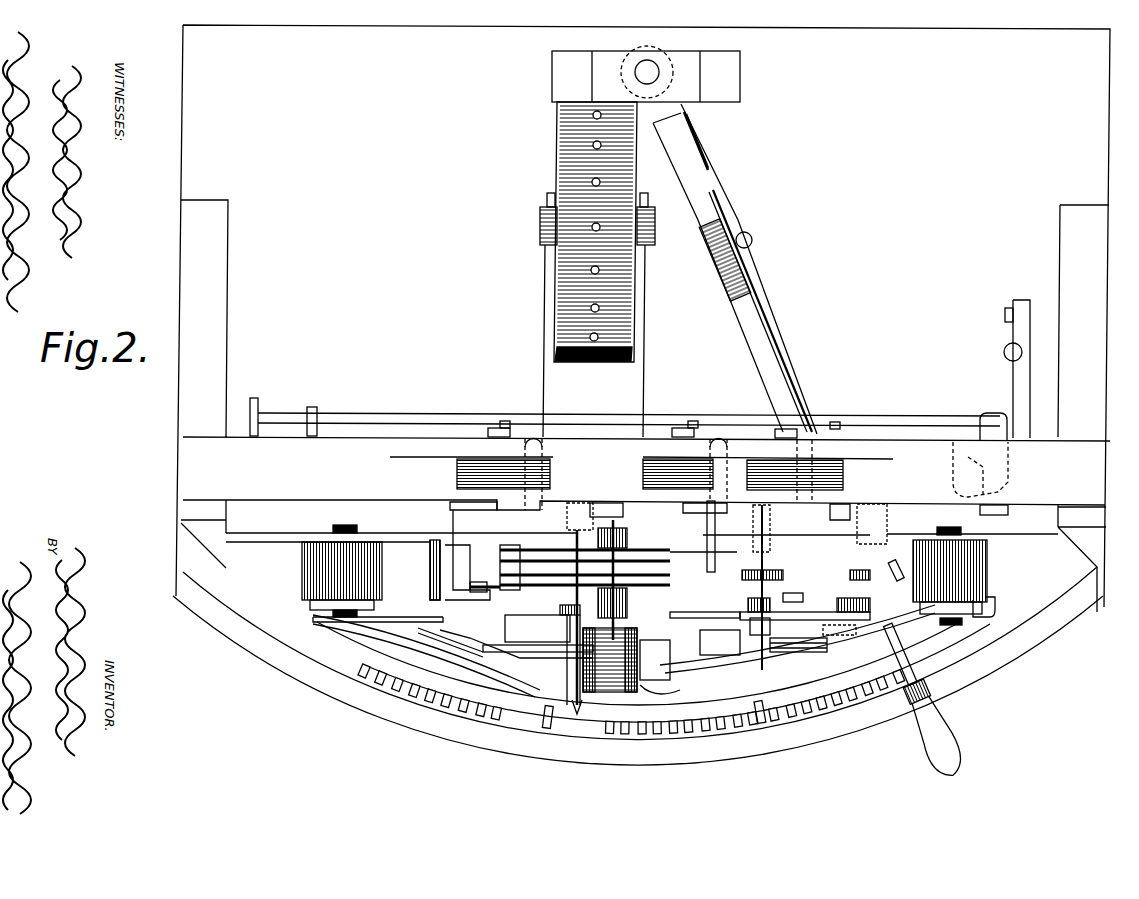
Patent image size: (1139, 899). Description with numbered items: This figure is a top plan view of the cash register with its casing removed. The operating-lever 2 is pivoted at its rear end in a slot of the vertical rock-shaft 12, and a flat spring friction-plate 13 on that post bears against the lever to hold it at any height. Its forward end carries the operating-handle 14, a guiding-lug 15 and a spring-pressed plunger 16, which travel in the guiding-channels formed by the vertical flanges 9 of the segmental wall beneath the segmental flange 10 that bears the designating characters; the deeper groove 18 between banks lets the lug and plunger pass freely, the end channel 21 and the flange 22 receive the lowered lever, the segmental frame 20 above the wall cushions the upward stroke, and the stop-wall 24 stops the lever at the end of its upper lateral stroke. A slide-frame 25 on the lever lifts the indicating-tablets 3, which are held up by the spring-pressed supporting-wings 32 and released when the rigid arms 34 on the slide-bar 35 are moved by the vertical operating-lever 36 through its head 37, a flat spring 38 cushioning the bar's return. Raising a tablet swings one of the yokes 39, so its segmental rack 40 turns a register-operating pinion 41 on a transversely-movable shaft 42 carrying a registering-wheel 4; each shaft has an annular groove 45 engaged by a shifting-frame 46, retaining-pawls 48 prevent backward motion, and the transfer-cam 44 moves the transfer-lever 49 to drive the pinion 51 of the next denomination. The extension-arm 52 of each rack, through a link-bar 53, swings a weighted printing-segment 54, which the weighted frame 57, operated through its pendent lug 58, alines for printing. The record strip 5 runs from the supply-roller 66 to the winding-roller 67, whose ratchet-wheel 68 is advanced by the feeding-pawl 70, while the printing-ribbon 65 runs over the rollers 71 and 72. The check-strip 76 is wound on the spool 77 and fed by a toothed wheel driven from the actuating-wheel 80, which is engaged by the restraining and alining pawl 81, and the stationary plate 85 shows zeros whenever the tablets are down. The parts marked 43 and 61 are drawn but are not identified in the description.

The operating-lever 2 is at (693, 174).
The indicating-tablets 3 is at (457, 466).
The registering-wheels 4 is at (850, 572).
The detail or record strip 5 is at (312, 543).
The vertical flanges 9 is at (520, 700).
The segmental flange 10 is at (395, 722).
The vertical rock-shaft 12 is at (626, 50).
The flat spring friction-plate 13 is at (695, 130).
The operating-handle 14 is at (958, 740).
The guiding-lug 15 is at (577, 670).
The spring-pressed plunger 16 is at (715, 655).
The groove or channel 18 is at (548, 712).
The segmental frame 20 is at (652, 732).
The end groove or channel 21 is at (1045, 625).
The flange 22 is at (400, 665).
The stop-wall 24 is at (1034, 580).
The slide-frame 25 is at (755, 280).
The spring-pressed supporting-wings 32 is at (505, 421).
The rigid arms 34 is at (495, 428).
The slide-bar 35 is at (378, 413).
The vertical operating-lever 36 is at (990, 417).
The horizontally-extending head 37 is at (953, 468).
The flat spring 38 is at (255, 398).
The frames or yokes 39 is at (545, 443).
The segmental racks 40 is at (555, 503).
The register-operating pinions 41 is at (575, 520).
The transversely-movable shafts 42 is at (570, 538).
The plate 43 is at (809, 595).
The transfer-cam 44 is at (740, 615).
The annular groove 45 is at (850, 636).
The shifting-frames 46 is at (450, 648).
The retaining-pawls 48 is at (595, 510).
The transfer-lever 49 is at (630, 660).
The pinion 51 is at (545, 650).
The extension-arm 52 is at (453, 550).
The link-bar 53 is at (630, 538).
The weighted segmental frames 54 is at (500, 556).
The weighted frame 57 is at (430, 565).
The pendent lug 58 is at (455, 622).
The plate 61 is at (740, 616).
The printing-ribbon 65 is at (660, 692).
The supply-roller 66 is at (348, 525).
The winding-roller 67 is at (949, 527).
The ratchet-wheel 68 is at (940, 614).
The feeding-pawl 70 is at (995, 600).
The ribbon roller 71 is at (655, 663).
The ribbon roller 72 is at (582, 702).
The check-strip 76 is at (557, 150).
The spool 77 is at (540, 228).
The actuating-wheel 80 is at (1030, 352).
The restraining and alining pawl 81 is at (1005, 325).
The stationary plate 85 is at (390, 457).